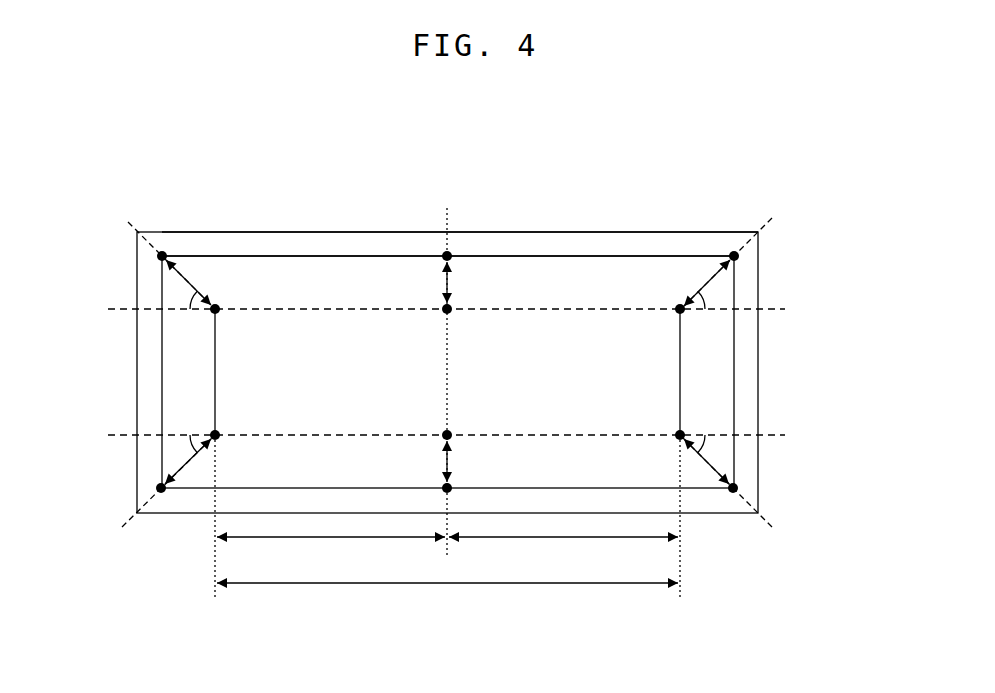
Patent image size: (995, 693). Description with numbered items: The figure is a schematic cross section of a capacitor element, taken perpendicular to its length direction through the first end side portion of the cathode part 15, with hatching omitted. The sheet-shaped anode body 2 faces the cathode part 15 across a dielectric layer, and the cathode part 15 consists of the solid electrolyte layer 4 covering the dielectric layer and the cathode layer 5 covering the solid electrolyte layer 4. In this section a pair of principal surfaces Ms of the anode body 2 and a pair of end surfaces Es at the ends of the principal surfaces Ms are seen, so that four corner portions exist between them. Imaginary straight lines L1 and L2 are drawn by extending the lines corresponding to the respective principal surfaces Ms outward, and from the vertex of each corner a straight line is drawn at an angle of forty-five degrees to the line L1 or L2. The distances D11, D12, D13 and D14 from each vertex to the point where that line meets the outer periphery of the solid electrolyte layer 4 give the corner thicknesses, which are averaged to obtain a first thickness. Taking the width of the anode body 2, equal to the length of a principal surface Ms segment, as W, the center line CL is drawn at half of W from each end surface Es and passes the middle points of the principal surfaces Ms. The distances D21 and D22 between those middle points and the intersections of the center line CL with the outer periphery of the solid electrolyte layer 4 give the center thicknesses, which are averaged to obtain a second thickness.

The anode body 2 is at (545, 345).
The cathode part 15 is at (348, 180).
The cathode layer 5 is at (300, 250).
The solid electrolyte layer 4 is at (358, 282).
The imaginary straight line L1 is at (459, 310).
The imaginary straight line L2 is at (459, 436).
The center line CL is at (448, 369).
The end surface Es is at (212, 377).
The principal surface Ms is at (507, 305).
The distance D11 is at (188, 283).
The distance D12 is at (710, 280).
The distance D13 is at (707, 465).
The distance D14 is at (186, 466).
The distance D21 is at (471, 282).
The distance D22 is at (471, 461).
The width W is at (447, 525).